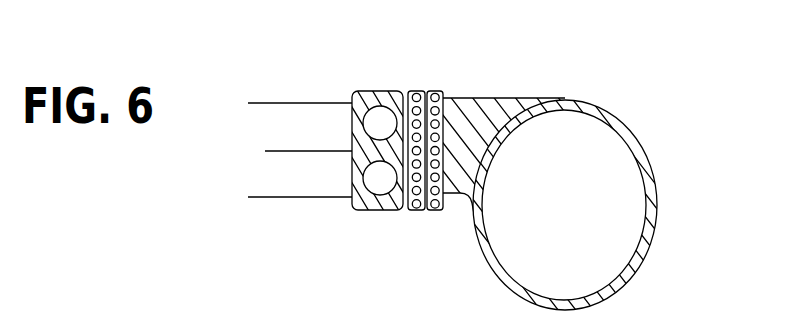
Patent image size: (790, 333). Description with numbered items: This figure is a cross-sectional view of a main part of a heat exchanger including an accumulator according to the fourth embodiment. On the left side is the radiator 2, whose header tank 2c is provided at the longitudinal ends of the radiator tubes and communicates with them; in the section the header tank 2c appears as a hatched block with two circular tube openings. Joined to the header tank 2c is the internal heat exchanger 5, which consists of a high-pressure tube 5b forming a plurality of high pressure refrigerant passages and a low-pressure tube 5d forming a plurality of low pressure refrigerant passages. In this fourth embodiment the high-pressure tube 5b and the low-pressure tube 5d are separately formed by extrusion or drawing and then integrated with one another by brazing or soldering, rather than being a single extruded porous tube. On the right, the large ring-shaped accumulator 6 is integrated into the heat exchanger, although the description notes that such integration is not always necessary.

The radiator 2 is at (293, 90).
The header tank 2c is at (377, 90).
The internal heat exchanger 5 is at (429, 151).
The high-pressure tube 5b is at (415, 211).
The low-pressure tube 5d is at (448, 211).
The accumulator 6 is at (592, 108).